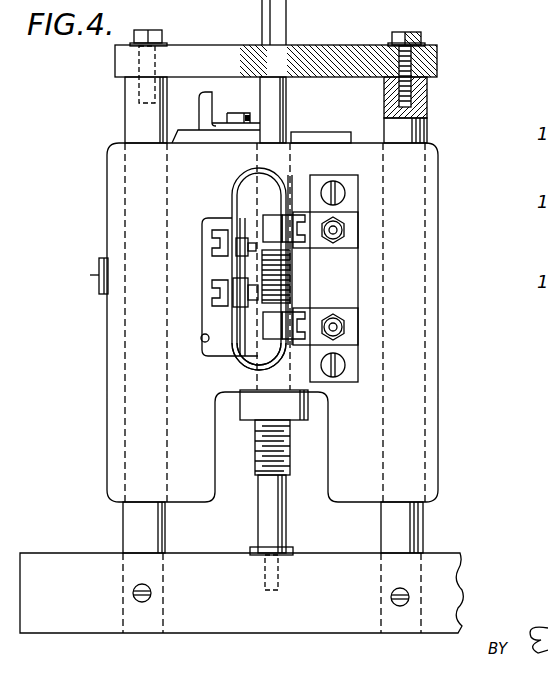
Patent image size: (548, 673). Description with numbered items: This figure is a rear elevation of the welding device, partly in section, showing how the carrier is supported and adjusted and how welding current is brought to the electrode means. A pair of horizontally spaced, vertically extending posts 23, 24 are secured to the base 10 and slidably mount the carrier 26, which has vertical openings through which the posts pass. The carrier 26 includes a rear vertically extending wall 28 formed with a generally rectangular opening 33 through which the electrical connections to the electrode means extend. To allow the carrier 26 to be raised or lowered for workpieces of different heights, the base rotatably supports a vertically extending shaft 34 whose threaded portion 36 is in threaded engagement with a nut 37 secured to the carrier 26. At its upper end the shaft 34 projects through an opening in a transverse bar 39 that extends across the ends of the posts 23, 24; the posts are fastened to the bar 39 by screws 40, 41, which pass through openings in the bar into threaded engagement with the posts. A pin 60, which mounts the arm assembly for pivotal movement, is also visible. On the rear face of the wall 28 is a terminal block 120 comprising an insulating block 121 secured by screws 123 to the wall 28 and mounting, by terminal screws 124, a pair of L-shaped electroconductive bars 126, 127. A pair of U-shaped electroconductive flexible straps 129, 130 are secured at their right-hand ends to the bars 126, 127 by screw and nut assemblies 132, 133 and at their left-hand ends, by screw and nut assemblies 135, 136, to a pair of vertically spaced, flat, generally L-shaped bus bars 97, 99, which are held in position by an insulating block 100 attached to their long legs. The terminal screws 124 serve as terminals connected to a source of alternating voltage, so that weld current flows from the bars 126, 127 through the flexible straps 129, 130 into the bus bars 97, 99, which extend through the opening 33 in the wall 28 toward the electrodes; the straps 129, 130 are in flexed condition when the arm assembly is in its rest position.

The base plate 10 is at (218, 623).
The post 23 is at (135, 114).
The post 24 is at (427, 105).
The carrier 26 is at (96, 413).
The rear vertically extending wall 28 is at (413, 415).
The rectangular opening 33 is at (201, 338).
The shaft 34 is at (289, 97).
The threaded portion 36 is at (258, 458).
The nut 37 is at (298, 420).
The transverse bar 39 is at (337, 56).
The screw 40 is at (163, 37).
The screw 41 is at (421, 37).
The pin 60 is at (97, 275).
The bus bar 97 is at (232, 262).
The bus bar 99 is at (228, 300).
The insulating block 100 is at (211, 221).
The terminal block 120 is at (388, 283).
The insulating block 121 is at (350, 274).
The screw 123 is at (340, 185).
The terminal screw 124 is at (342, 230).
The L-shaped electroconductive bar 126 is at (355, 218).
The L-shaped electroconductive bar 127 is at (350, 337).
The U-shaped flexible strap 129 is at (247, 172).
The U-shaped flexible strap 130 is at (237, 362).
The screw and nut assembly 132 is at (305, 242).
The screw and nut assembly 133 is at (296, 315).
The screw and nut assembly 135 is at (213, 242).
The screw and nut assembly 136 is at (212, 291).